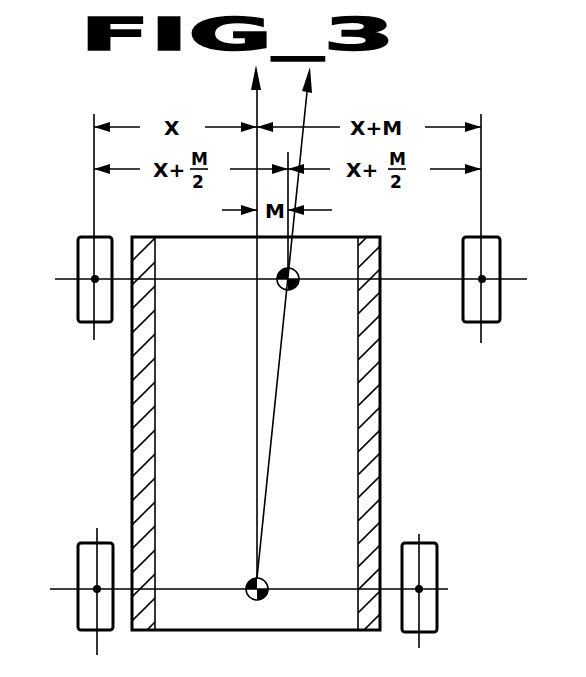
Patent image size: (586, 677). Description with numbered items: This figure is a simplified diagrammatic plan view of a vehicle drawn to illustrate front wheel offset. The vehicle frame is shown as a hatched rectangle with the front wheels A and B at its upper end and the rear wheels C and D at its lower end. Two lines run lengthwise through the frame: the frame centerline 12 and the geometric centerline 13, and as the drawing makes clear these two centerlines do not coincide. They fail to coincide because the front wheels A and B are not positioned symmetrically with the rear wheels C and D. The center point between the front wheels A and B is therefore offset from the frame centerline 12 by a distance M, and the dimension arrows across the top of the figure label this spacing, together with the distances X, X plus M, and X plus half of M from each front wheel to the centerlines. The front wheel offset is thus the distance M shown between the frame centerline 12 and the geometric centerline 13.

The frame centerline 12 is at (257, 366).
The geometric centerline 13 is at (283, 370).
The front wheel A is at (95, 279).
The front wheel B is at (482, 279).
The rear wheel C is at (97, 589).
The rear wheel D is at (419, 589).